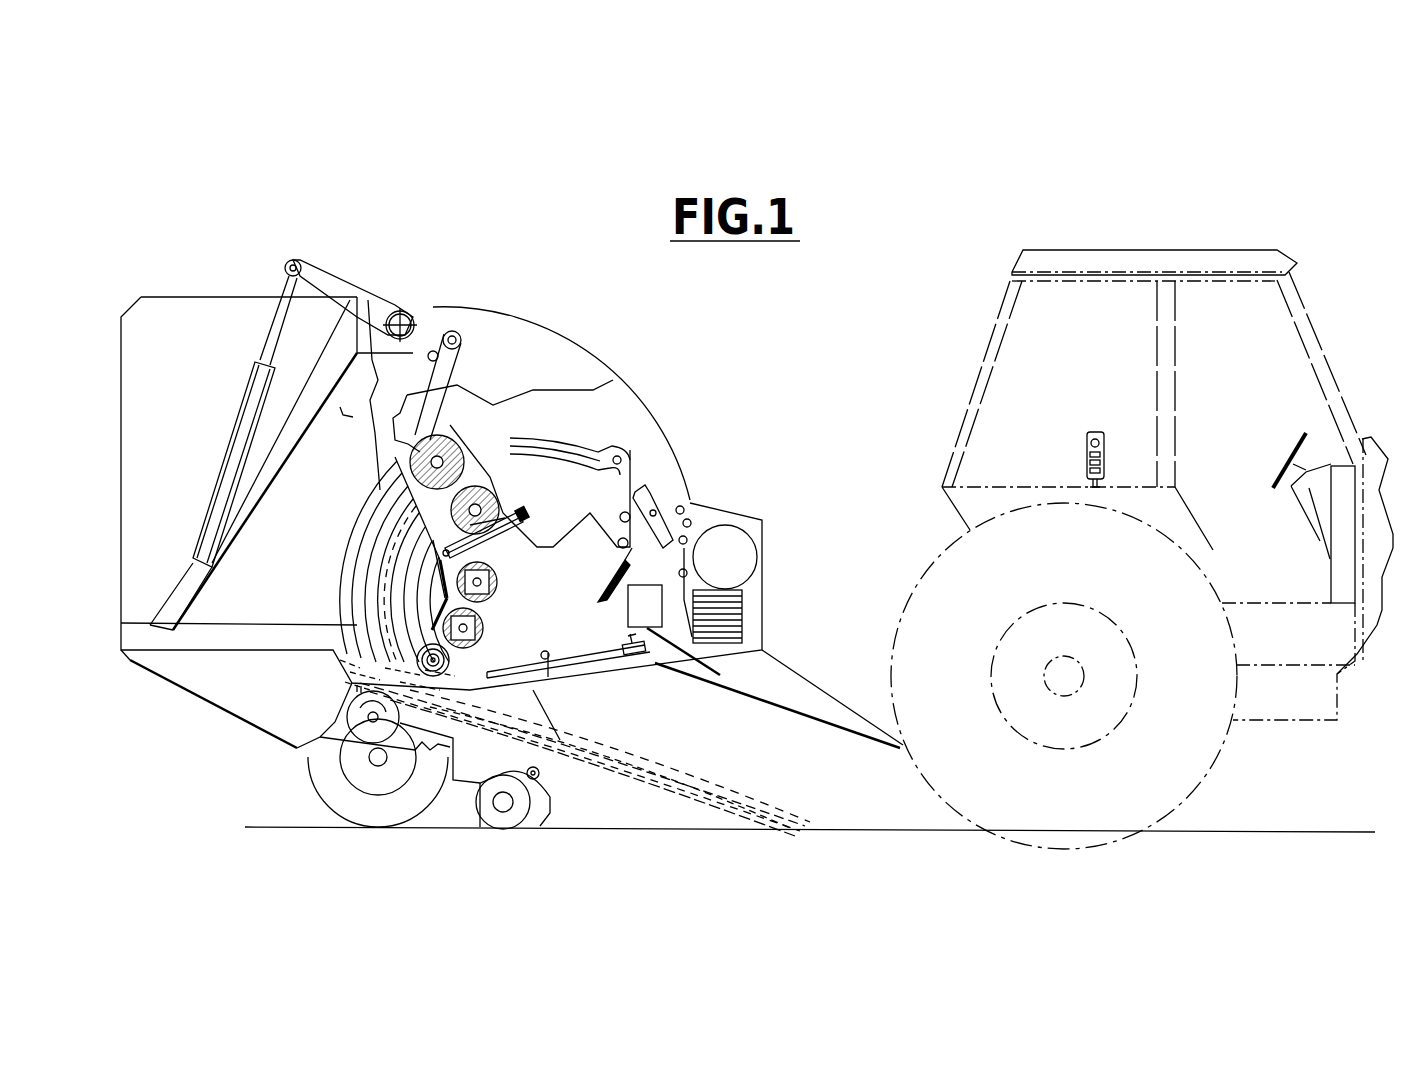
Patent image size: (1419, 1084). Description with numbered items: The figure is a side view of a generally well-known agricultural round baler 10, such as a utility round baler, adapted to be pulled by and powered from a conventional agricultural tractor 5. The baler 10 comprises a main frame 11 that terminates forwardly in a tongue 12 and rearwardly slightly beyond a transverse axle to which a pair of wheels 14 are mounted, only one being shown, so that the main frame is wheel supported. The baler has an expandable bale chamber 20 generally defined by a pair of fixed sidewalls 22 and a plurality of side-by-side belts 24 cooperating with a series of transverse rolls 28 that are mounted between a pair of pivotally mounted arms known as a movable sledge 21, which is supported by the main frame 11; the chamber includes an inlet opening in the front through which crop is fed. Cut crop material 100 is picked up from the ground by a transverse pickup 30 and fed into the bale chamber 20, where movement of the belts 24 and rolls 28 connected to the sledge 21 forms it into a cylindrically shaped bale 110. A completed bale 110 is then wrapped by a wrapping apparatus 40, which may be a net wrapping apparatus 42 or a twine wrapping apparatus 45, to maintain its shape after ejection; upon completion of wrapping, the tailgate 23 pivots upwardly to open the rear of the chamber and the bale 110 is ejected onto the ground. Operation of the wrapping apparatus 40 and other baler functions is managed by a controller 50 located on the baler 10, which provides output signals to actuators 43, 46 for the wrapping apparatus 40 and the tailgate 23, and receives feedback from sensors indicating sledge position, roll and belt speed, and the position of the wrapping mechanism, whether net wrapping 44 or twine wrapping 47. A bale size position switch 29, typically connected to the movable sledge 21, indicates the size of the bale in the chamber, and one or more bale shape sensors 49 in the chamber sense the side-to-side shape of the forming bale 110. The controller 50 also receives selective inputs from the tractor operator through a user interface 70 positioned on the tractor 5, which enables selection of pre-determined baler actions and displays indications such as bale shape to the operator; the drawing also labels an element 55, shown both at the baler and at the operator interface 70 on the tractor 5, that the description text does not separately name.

The agricultural tractor 5 is at (973, 226).
The baler 10 is at (492, 270).
The main frame 11 is at (208, 678).
The tongue 12 is at (847, 697).
The wheels 14 is at (333, 800).
The expandable bale chamber 20 is at (447, 497).
The movable sledge 21 is at (487, 398).
The fixed sidewalls 22 is at (348, 410).
The tailgate 23 is at (210, 297).
The belts 24 is at (457, 437).
The transverse rolls 28 is at (493, 542).
The bale size position switch 29 is at (525, 510).
The transverse pickup 30 is at (592, 800).
The wrapping apparatus 40 is at (683, 483).
The net wrapping apparatus 42 is at (647, 434).
The actuator 43 is at (437, 527).
The net wrapping position sensor 44 is at (437, 547).
The twine wrapping apparatus 45 is at (635, 678).
The wrapper actuator 46 is at (655, 658).
The wrapper position switch 47 is at (622, 660).
The bale shape sensors 49 is at (432, 615).
The controller 50 is at (637, 607).
The sensor / controller connection 55 is at (720, 667).
The user interface 70 is at (1100, 433).
The cut crop material 100 is at (700, 793).
The bale 110 is at (433, 508).